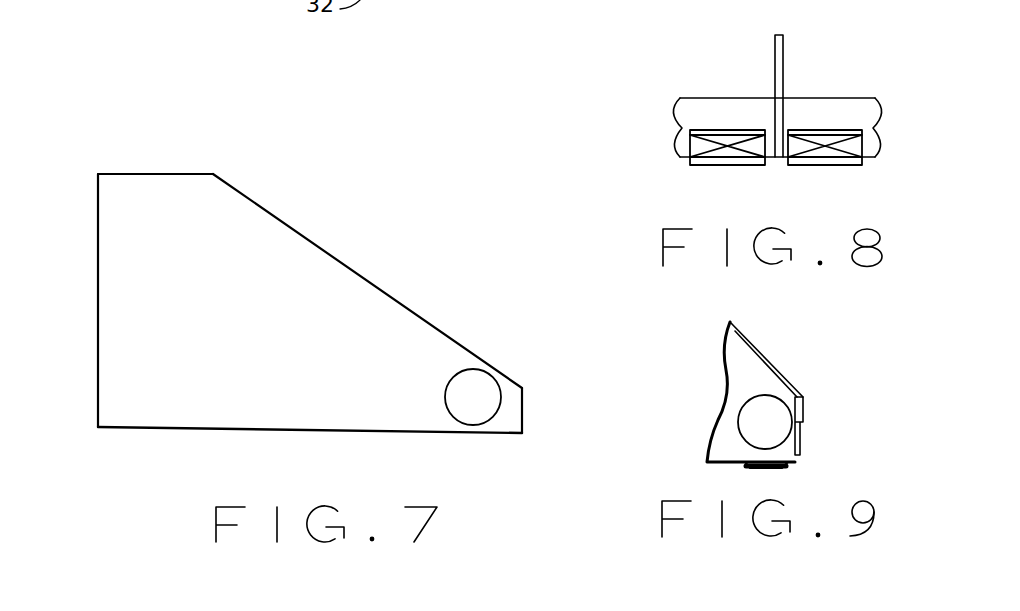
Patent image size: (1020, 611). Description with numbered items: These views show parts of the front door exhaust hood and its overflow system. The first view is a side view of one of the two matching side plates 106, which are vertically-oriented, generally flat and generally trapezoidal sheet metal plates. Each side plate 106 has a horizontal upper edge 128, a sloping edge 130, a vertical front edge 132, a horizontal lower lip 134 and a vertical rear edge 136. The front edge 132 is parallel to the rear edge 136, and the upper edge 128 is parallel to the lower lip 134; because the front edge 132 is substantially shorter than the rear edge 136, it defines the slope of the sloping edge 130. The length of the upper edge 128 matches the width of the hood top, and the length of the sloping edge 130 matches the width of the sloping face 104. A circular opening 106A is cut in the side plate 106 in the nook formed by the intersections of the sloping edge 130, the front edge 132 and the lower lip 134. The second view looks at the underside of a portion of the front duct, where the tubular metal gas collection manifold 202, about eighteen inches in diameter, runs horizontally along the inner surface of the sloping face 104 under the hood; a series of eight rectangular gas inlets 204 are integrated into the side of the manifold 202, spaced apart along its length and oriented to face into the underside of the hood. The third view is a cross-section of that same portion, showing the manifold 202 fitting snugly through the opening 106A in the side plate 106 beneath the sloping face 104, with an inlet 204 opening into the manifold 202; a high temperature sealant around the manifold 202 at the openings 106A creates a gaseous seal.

In FIG. 7, the side plate 106 is at (185, 447).
In FIG. 7, the circular opening 106A is at (490, 350).
In FIG. 7, the horizontal upper edge 128 is at (180, 174).
In FIG. 7, the sloping edge 130 is at (311, 237).
In FIG. 7, the vertical front edge 132 is at (522, 415).
In FIG. 7, the horizontal lower lip 134 is at (338, 435).
In FIG. 7, the vertical rear edge 136 is at (98, 317).
In FIG. 8, the manifold 202 is at (739, 78).
In FIG. 9, the manifold 202 is at (782, 422).
In FIG. 8, the gas inlets 204 is at (813, 177).
In FIG. 9, the gas inlets 204 is at (748, 455).
In FIG. 9, the sloping face 104 is at (753, 340).